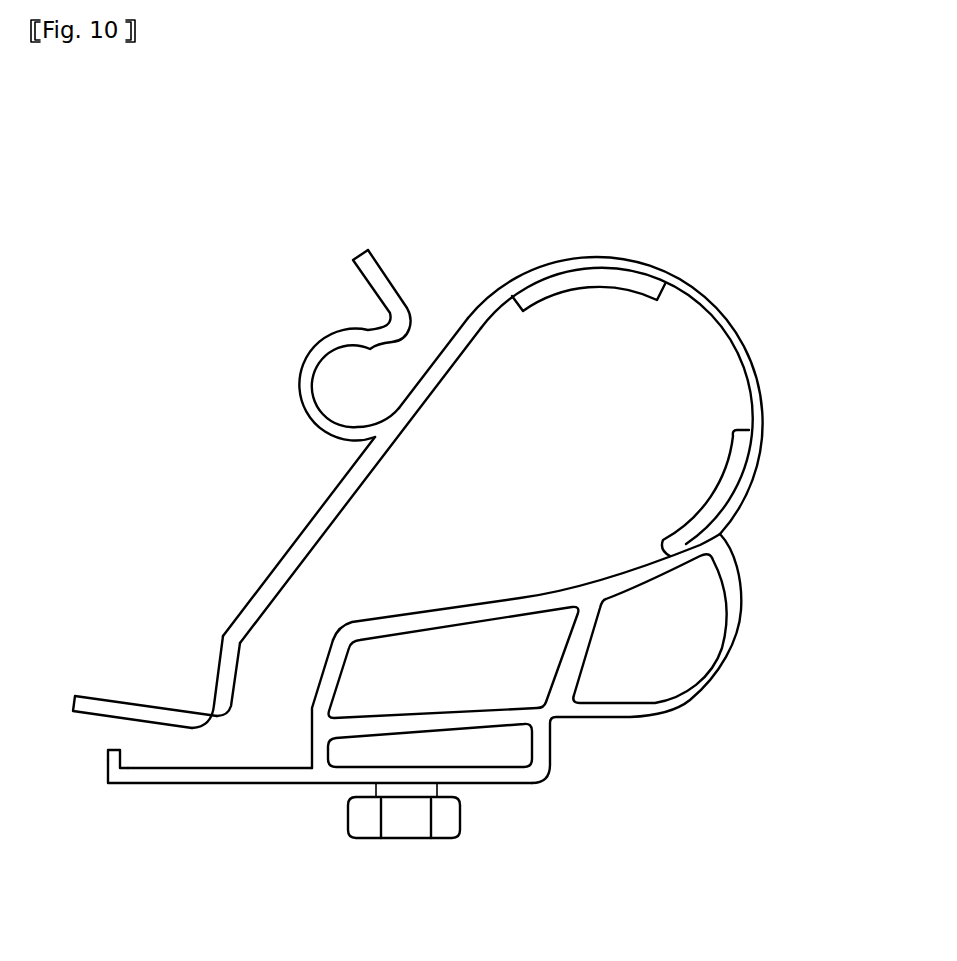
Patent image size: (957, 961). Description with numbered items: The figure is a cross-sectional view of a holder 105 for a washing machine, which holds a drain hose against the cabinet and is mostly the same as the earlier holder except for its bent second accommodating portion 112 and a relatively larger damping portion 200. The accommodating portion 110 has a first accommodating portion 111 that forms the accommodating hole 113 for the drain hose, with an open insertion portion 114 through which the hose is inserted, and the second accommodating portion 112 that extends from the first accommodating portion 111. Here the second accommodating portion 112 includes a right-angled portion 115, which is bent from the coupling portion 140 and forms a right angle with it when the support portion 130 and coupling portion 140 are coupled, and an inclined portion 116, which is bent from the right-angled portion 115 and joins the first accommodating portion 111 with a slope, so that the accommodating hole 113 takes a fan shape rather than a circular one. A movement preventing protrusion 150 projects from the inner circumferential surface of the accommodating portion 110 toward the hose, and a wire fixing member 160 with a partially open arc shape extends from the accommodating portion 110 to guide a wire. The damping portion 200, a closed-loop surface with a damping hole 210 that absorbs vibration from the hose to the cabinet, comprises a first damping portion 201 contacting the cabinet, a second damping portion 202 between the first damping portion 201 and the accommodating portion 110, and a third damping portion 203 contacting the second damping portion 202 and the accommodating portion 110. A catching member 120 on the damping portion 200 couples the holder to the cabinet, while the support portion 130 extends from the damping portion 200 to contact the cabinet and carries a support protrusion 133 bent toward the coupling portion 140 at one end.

The holder 105 is at (450, 104).
The accommodating portion 110 is at (300, 171).
The first accommodating portion 111 is at (530, 273).
The second accommodating portion 112 is at (239, 263).
The accommodating hole 113 is at (641, 395).
The insertion portion 114 is at (297, 668).
The right-angled portion 115 is at (222, 680).
The inclined portion 116 is at (328, 500).
The catching member 120 is at (433, 848).
The support portion 130 is at (158, 786).
The support protrusion 133 is at (108, 757).
The coupling portion 140 is at (121, 700).
The movement preventing protrusion 150 is at (615, 288).
The wire fixing member 160 is at (342, 337).
The damping portion 200 is at (832, 632).
The first damping portion 201 is at (543, 758).
The second damping portion 202 is at (580, 637).
The third damping portion 203 is at (735, 632).
The damping hole 210 is at (617, 658).